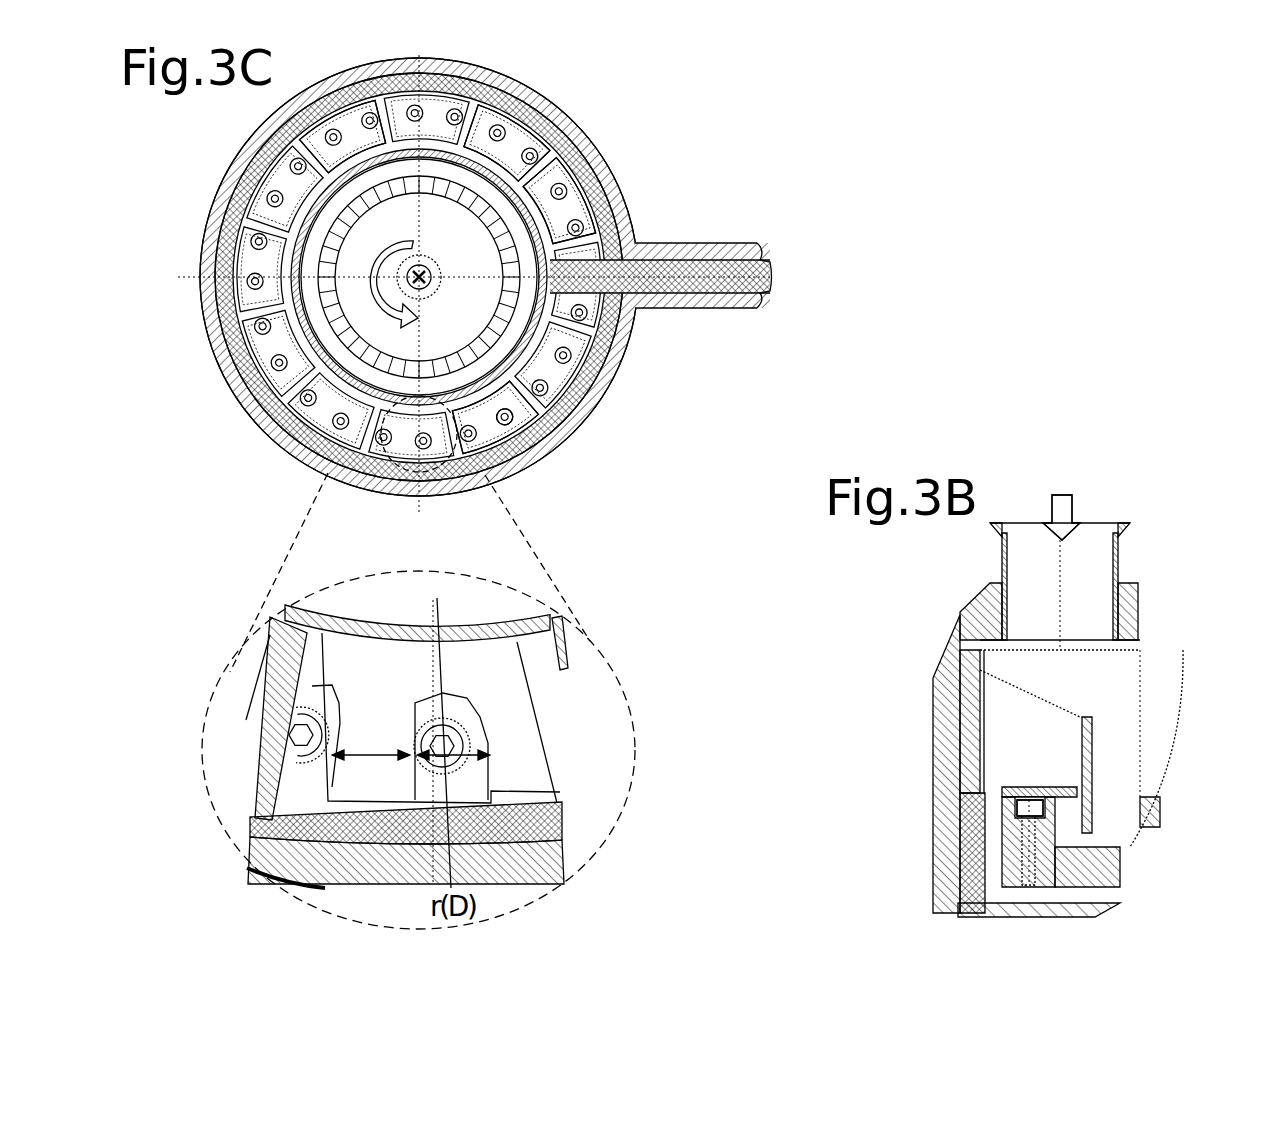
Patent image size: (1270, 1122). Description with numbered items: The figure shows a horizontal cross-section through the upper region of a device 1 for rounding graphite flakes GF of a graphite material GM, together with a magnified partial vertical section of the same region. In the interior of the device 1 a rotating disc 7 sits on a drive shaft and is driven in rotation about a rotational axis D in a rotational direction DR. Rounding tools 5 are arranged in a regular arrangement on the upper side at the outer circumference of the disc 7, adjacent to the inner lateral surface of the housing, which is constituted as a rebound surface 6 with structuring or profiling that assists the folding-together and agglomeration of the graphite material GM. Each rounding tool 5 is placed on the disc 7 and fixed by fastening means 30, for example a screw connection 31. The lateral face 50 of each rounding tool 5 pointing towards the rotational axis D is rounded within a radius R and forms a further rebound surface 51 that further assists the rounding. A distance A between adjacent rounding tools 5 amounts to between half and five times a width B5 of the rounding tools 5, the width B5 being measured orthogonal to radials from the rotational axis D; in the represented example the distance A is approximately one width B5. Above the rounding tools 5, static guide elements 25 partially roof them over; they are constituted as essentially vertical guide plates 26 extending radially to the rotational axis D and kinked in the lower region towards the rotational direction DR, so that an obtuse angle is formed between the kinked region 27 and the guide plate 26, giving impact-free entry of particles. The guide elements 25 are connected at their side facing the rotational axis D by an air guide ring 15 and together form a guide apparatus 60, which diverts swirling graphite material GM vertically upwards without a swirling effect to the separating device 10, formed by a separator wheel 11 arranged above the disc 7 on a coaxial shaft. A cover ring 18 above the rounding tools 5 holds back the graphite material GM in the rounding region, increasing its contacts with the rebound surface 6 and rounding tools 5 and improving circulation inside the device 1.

In FIG. 3C, the device 1 is at (238, 456).
In FIG. 3C, the rounding tools 5 is at (557, 162).
In FIG. 3B, the rounding tools 5 is at (1002, 822).
In FIG. 3C, the rebound surface 6 is at (597, 378).
In FIG. 3B, the rebound surface 6 is at (983, 858).
In FIG. 3C, the disc 7 is at (573, 340).
In FIG. 3B, the disc 7 is at (1103, 857).
In FIG. 3C, the separating device 10 is at (512, 418).
In FIG. 3C, the separator wheel 11 is at (491, 417).
In FIG. 3C, the air guide ring 15 is at (482, 153).
In FIG. 3B, the air guide ring 15 is at (1092, 768).
In FIG. 3B, the cover ring 18 is at (1007, 797).
In FIG. 3C, the guide elements 25 is at (574, 183).
In FIG. 3B, the guide elements 25 is at (1052, 713).
In FIG. 3C, the guide plates 26 is at (237, 323).
In FIG. 3C, the kinked region 27 is at (228, 325).
In FIG. 3C, the fastening means 30 is at (507, 418).
In FIG. 3B, the fastening means 30 is at (1037, 834).
In FIG. 3C, the screw connection 31 is at (505, 417).
In FIG. 3B, the screw connection 31 is at (1030, 808).
In FIG. 3C, the lateral face 50 is at (333, 152).
In FIG. 3C, the further rebound surface 51 is at (345, 137).
In FIG. 3C, the guide apparatus 60 is at (527, 177).
In FIG. 3C, the radius R is at (419, 277).
In FIG. 3C, the rotational axis D is at (422, 288).
In FIG. 3C, the rotational direction DR is at (389, 297).
In FIG. 3C, the distance A is at (371, 740).
In FIG. 3C, the width B5 is at (466, 700).
In FIG. 3B, the graphite material GM is at (1070, 502).
In FIG. 3B, the graphite flakes GF is at (1061, 517).